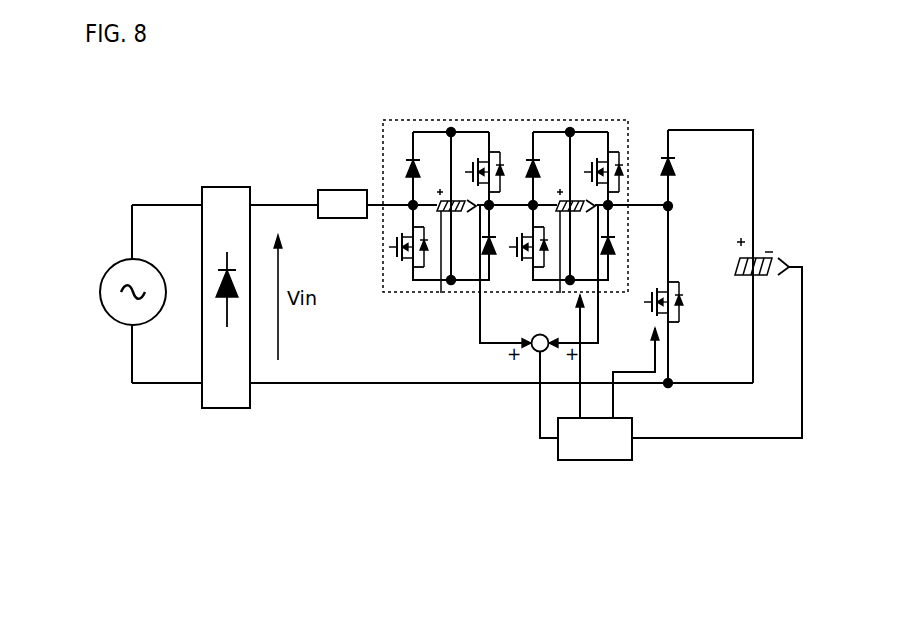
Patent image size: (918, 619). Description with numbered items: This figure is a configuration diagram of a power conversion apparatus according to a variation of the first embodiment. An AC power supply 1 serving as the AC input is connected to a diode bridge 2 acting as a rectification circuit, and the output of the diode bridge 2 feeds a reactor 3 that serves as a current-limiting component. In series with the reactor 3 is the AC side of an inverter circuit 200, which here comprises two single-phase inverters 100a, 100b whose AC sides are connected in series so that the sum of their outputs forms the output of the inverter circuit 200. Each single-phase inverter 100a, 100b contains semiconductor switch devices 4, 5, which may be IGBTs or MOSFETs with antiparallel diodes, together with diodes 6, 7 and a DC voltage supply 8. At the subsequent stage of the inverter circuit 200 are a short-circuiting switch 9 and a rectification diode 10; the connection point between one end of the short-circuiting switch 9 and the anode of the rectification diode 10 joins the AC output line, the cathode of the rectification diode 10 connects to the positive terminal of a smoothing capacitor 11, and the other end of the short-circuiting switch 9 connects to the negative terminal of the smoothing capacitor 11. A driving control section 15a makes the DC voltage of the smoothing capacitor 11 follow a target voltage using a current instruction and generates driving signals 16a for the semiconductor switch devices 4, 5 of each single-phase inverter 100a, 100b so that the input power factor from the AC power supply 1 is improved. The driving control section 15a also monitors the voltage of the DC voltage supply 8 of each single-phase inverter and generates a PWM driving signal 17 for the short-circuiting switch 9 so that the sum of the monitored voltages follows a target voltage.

The AC power supply 1 is at (97, 298).
The diode bridge 2 is at (198, 184).
The reactor 3 is at (323, 187).
The semiconductor switch device 4 is at (398, 262).
The semiconductor switch device 5 is at (478, 151).
The diode 6 is at (397, 172).
The diode 7 is at (495, 258).
The DC voltage supply 8 is at (441, 295).
The short-circuiting switch 9 is at (650, 318).
The rectification diode 10 is at (678, 170).
The smoothing capacitor 11 is at (763, 253).
The driving control section 15a is at (613, 462).
The driving signals 16a is at (578, 397).
The driving signal 17 is at (640, 385).
The single-phase inverter 100a is at (428, 131).
The single-phase inverter 100b is at (548, 131).
The inverter circuit 200 is at (377, 120).